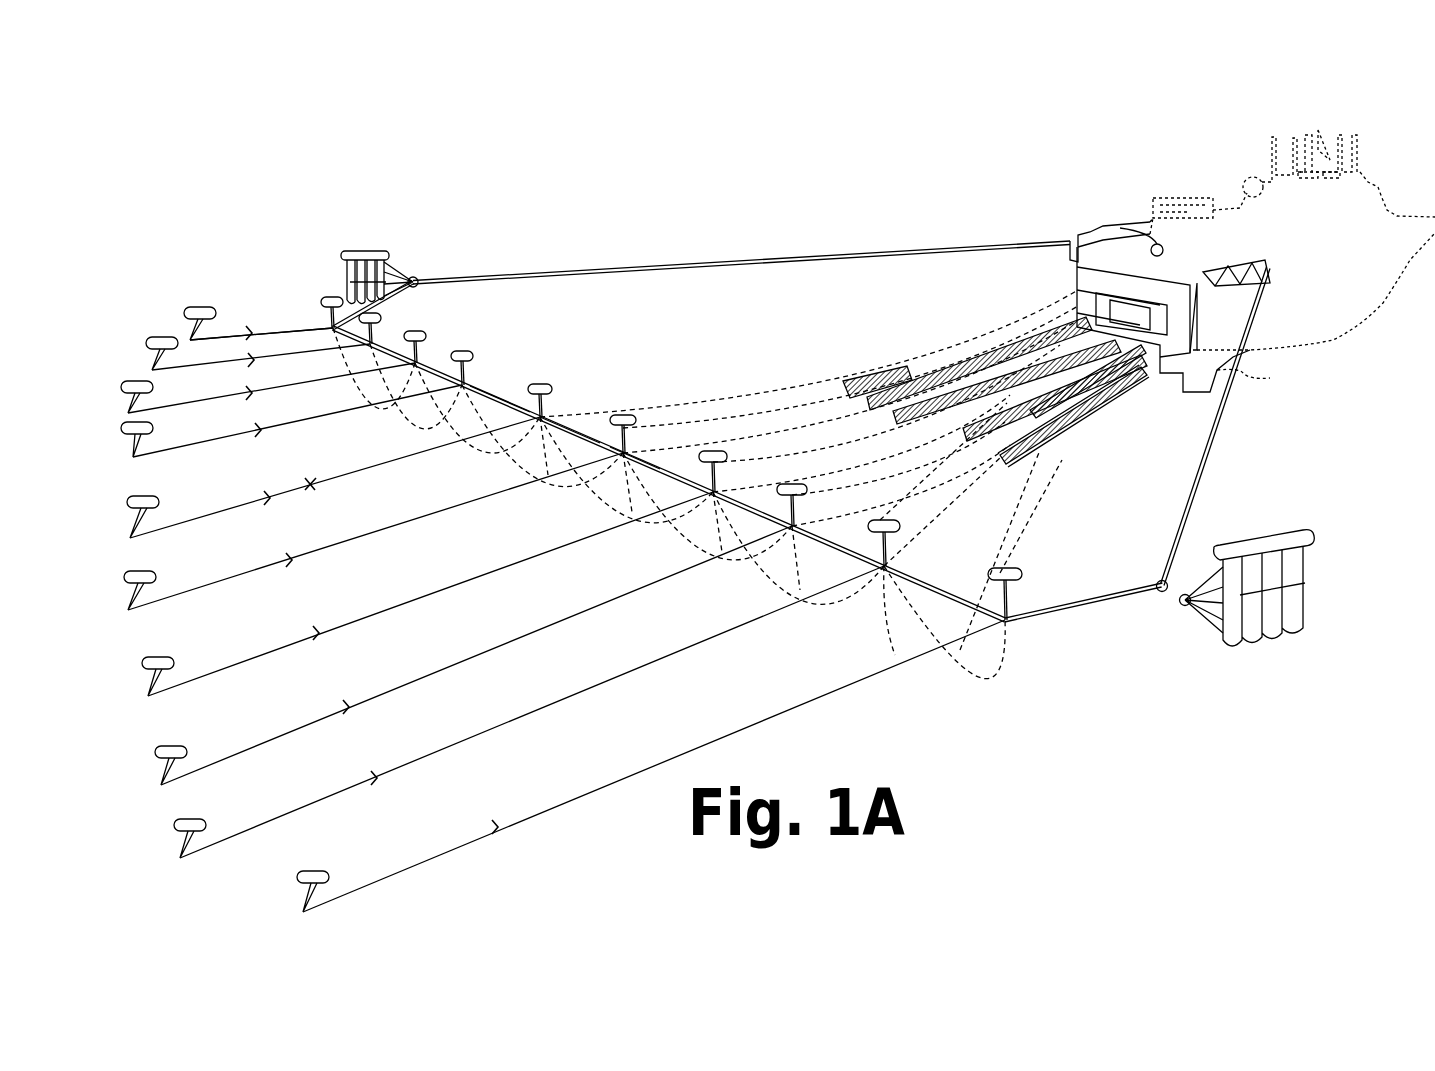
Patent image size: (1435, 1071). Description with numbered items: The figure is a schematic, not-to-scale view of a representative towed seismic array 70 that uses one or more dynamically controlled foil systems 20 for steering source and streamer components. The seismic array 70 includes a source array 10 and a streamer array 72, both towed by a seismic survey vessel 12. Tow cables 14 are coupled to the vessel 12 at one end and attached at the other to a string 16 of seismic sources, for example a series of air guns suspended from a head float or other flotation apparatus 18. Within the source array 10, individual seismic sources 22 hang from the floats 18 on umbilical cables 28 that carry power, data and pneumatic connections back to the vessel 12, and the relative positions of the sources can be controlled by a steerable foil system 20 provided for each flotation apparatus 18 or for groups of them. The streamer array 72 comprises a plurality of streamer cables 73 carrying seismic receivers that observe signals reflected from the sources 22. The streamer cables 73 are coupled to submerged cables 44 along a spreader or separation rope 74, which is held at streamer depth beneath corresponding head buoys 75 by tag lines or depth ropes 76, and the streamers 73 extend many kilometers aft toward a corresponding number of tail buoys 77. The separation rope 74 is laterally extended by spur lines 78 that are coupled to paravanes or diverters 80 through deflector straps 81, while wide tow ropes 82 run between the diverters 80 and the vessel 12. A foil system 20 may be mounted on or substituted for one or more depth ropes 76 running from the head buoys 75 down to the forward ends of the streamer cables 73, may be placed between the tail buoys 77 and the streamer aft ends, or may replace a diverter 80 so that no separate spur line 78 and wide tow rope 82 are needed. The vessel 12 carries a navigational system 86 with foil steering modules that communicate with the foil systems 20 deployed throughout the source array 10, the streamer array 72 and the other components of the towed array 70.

The source array 10 is at (879, 296).
The vessel 12 is at (1393, 212).
The tow cable 14 is at (1025, 340).
The string of seismic sources 16 is at (858, 360).
The flotation apparatus 18 is at (1073, 424).
The dynamically controlled foil system 20 is at (1057, 453).
The seismic source 22 is at (330, 300).
The umbilical cable 28 is at (1105, 390).
The submerged cable 44 is at (820, 370).
The towed seismic array 70 is at (578, 108).
The streamer array 72 is at (181, 264).
The streamer cable 73 is at (422, 518).
The separation rope 74 is at (500, 380).
The head buoy 75 is at (548, 402).
The depth rope 76 is at (560, 400).
The tail buoy 77 is at (309, 482).
The spur line 78 is at (1077, 603).
The paravane 80 is at (362, 250).
The deflector strap 81 is at (390, 266).
The wide tow rope 82 is at (1243, 373).
The navigational system 86 is at (1093, 233).